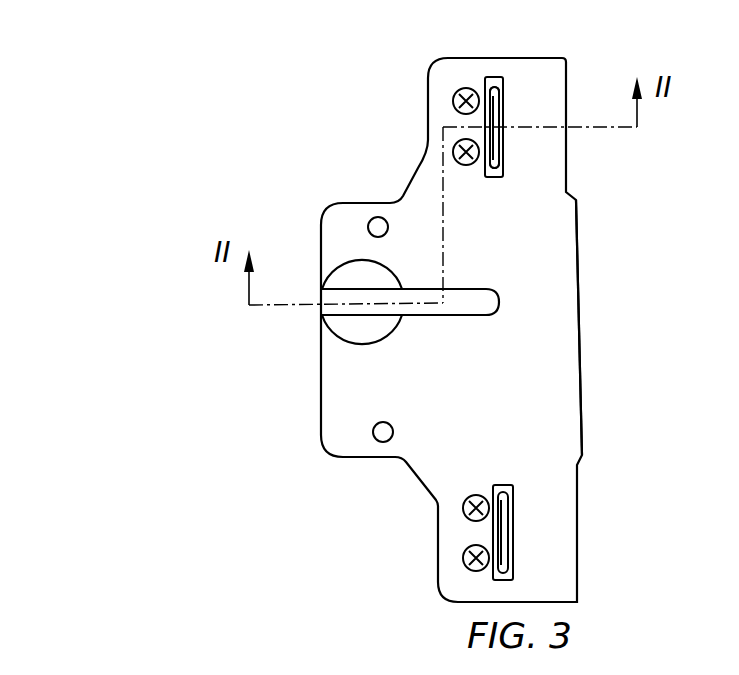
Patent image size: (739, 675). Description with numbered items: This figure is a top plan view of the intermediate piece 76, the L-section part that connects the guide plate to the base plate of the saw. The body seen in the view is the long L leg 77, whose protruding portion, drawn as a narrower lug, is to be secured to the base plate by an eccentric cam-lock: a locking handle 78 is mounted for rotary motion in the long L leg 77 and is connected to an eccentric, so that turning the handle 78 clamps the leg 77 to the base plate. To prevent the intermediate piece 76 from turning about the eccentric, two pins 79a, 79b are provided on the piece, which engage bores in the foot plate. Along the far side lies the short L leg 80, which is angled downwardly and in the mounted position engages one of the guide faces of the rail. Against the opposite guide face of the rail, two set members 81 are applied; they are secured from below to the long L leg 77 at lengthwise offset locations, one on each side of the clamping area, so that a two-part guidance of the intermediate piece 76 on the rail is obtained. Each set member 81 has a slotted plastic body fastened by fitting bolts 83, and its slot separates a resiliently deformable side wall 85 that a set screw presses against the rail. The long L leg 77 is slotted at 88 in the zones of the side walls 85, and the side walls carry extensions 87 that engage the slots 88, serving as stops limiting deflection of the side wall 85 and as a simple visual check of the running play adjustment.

The intermediate piece 76 is at (606, 279).
The long L leg 77 is at (370, 420).
The locking handle 78 is at (362, 342).
The pin 79a is at (383, 443).
The pin 79b is at (378, 217).
The short L leg 80 is at (584, 383).
The set members 81 is at (462, 123).
The fitting bolts 83 is at (458, 89).
The side wall 85 is at (500, 93).
The extensions 87 is at (494, 127).
The slots 88 is at (510, 152).